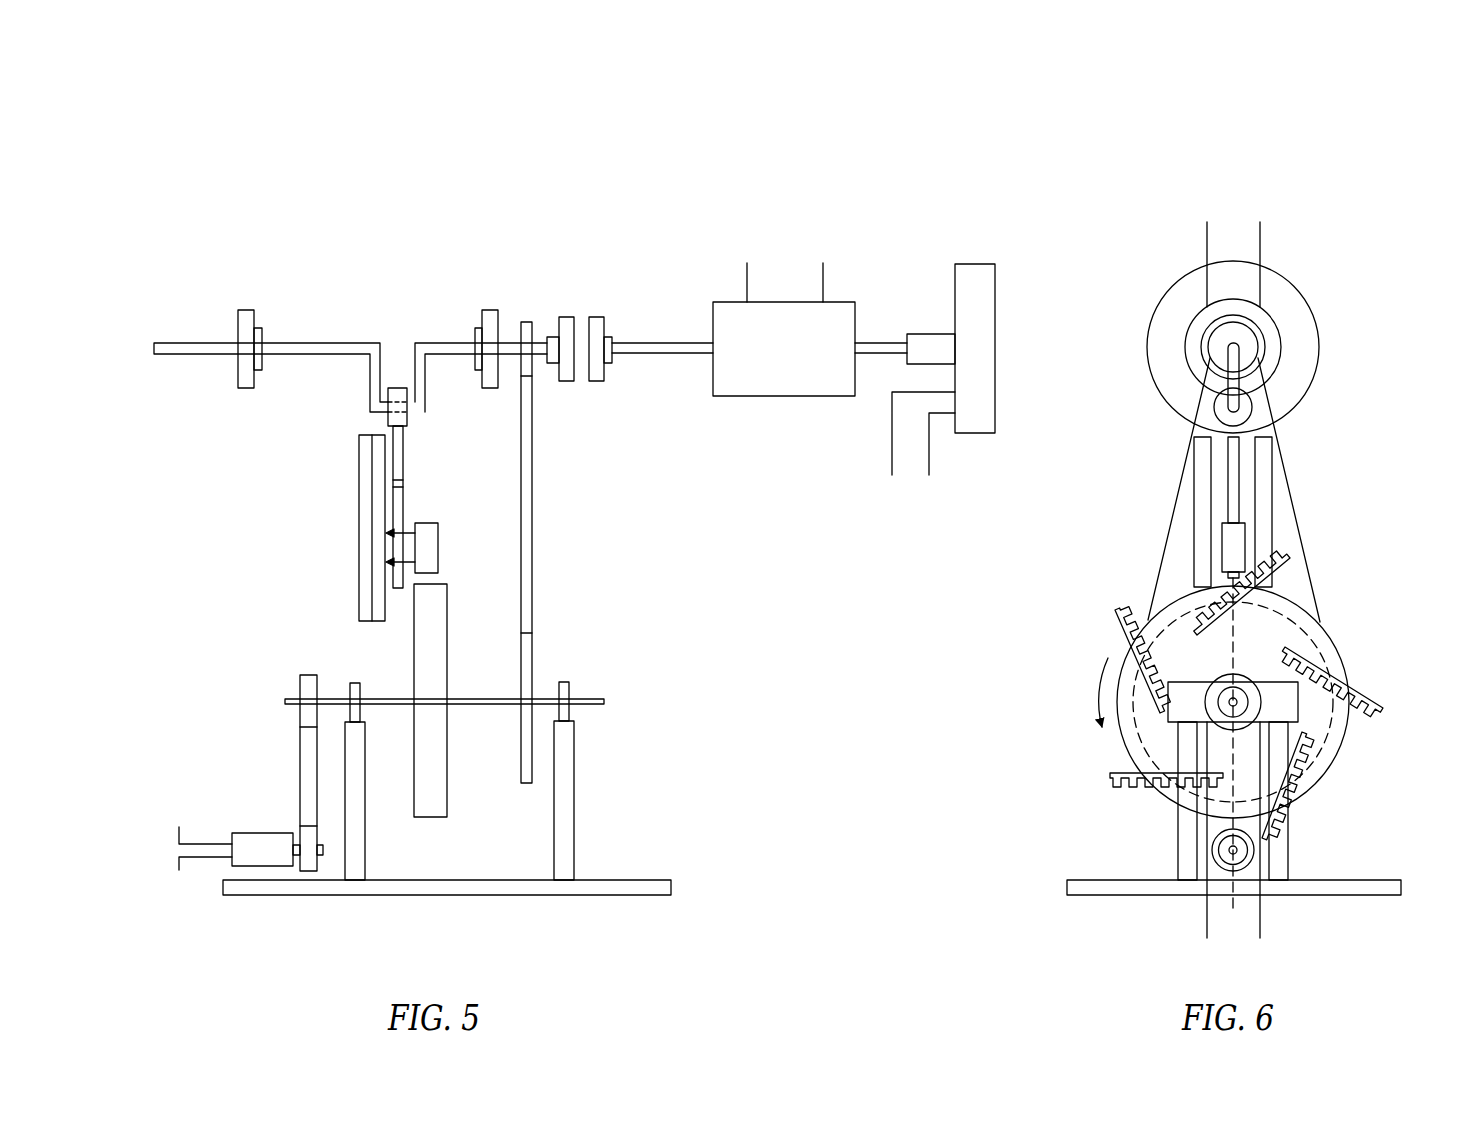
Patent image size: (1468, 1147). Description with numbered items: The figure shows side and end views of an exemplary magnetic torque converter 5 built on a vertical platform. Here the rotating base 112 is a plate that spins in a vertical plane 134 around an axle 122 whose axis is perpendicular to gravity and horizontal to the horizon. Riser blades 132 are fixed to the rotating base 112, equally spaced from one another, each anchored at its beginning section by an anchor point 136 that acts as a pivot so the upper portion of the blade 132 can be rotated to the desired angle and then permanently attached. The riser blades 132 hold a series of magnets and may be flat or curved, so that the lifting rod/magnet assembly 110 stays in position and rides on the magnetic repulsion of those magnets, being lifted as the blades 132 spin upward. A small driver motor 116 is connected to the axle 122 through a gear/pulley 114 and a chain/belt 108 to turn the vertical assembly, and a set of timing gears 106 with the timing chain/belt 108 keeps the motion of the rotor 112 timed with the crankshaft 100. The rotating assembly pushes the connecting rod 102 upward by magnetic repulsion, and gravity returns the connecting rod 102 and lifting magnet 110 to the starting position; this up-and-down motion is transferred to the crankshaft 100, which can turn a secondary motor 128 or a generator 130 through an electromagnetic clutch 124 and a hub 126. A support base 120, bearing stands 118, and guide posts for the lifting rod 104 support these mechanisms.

In FIG. 5, the magnetic torque converter 5 is at (140, 525).
In FIG. 6, the magnetic torque converter 5 is at (1320, 232).
In FIG. 5, the crankshaft 100 is at (314, 343).
In FIG. 6, the crankshaft 100 is at (1245, 383).
In FIG. 5, the lifting rod/connecting rod 102 is at (403, 458).
In FIG. 5, the guide posts for the lifting rod 104 is at (359, 515).
In FIG. 6, the guide posts for the lifting rod 104 is at (1265, 535).
In FIG. 5, the timing gears 106 is at (527, 330).
In FIG. 5, the timing chain/belt 108 is at (532, 500).
In FIG. 6, the timing chain/belt 108 is at (1165, 535).
In FIG. 5, the lifting rod/magnet assembly 110 is at (438, 558).
In FIG. 6, the lifting rod/magnet assembly 110 is at (1235, 535).
In FIG. 5, the rotating base 112 is at (414, 650).
In FIG. 6, the rotating base 112 is at (1347, 737).
In FIG. 5, the gear/pulley 114 is at (300, 720).
In FIG. 5, the driver motor 116 is at (262, 866).
In FIG. 6, the driver motor 116 is at (1212, 850).
In FIG. 5, the bearing stands 118 is at (365, 855).
In FIG. 6, the bearing stands 118 is at (1288, 835).
In FIG. 5, the support base 120 is at (671, 886).
In FIG. 6, the support base 120 is at (1067, 885).
In FIG. 5, the axle 122 is at (604, 702).
In FIG. 5, the electromagnetic clutch 124 is at (597, 317).
In FIG. 5, the hub 126 is at (567, 317).
In FIG. 5, the secondary motor 128 is at (792, 396).
In FIG. 6, the secondary motor 128 is at (1282, 347).
In FIG. 5, the generator 130 is at (972, 264).
In FIG. 6, the generator 130 is at (1293, 285).
In FIG. 6, the riser blades 132 is at (1095, 615).
In FIG. 5, the vertical plane 134 is at (330, 622).
In FIG. 6, the anchor point 136 is at (1305, 630).